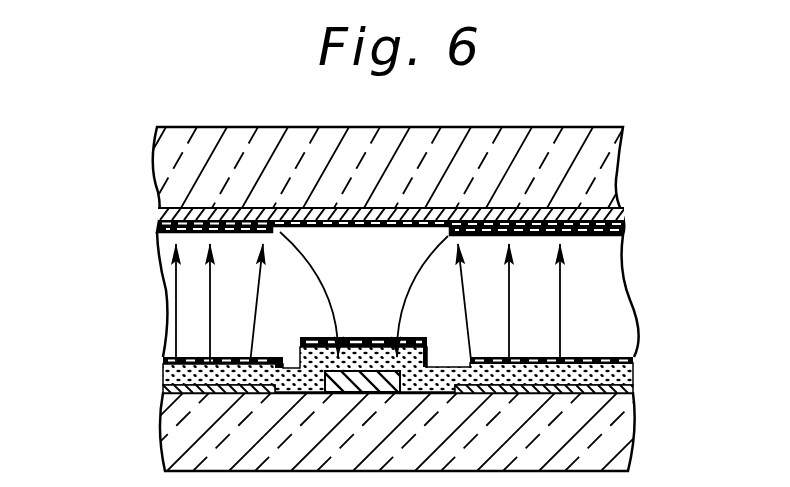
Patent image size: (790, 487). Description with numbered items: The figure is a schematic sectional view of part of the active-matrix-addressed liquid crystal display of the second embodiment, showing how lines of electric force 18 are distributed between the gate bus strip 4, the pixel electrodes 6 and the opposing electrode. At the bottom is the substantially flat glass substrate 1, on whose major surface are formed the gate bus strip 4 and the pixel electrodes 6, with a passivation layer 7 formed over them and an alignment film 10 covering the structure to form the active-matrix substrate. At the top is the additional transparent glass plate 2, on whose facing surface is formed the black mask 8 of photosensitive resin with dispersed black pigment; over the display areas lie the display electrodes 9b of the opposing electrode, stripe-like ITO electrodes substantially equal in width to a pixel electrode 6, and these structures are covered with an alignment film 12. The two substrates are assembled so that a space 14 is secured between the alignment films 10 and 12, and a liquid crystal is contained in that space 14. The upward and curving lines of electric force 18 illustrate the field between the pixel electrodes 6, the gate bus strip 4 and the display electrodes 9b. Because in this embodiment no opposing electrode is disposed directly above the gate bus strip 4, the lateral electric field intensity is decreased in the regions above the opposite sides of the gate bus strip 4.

The glass substrate 1 is at (630, 430).
The glass plate 2 is at (622, 153).
The gate bus strip 4 is at (366, 373).
The pixel electrode 6 is at (640, 390).
The passivation layer 7 is at (645, 364).
The black mask 8 is at (420, 231).
The display electrode 9b is at (625, 208).
The alignment film 10 is at (165, 338).
The alignment film 12 is at (630, 232).
The space 14 is at (165, 260).
The lines of electric force 18 is at (175, 303).